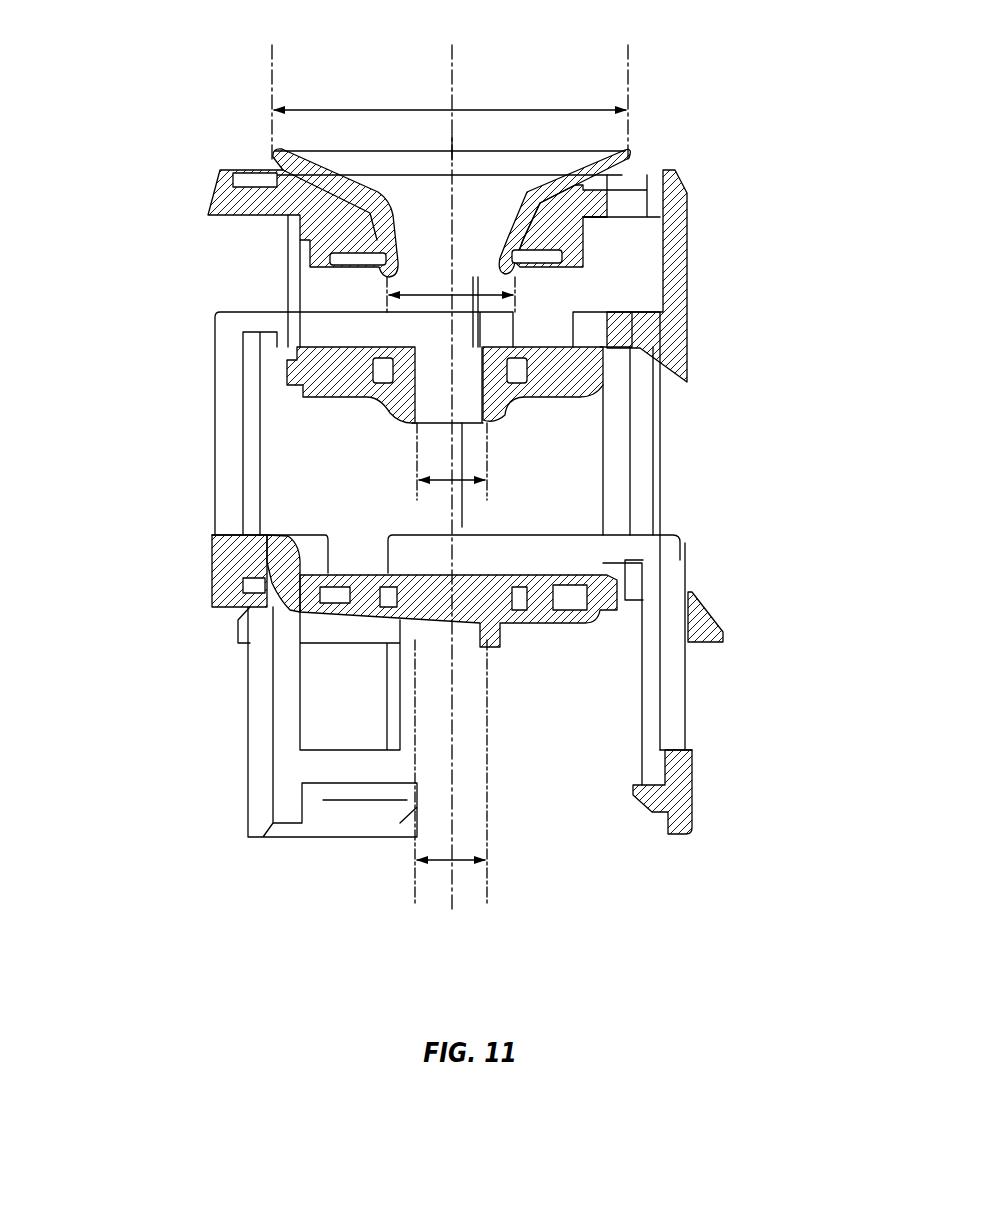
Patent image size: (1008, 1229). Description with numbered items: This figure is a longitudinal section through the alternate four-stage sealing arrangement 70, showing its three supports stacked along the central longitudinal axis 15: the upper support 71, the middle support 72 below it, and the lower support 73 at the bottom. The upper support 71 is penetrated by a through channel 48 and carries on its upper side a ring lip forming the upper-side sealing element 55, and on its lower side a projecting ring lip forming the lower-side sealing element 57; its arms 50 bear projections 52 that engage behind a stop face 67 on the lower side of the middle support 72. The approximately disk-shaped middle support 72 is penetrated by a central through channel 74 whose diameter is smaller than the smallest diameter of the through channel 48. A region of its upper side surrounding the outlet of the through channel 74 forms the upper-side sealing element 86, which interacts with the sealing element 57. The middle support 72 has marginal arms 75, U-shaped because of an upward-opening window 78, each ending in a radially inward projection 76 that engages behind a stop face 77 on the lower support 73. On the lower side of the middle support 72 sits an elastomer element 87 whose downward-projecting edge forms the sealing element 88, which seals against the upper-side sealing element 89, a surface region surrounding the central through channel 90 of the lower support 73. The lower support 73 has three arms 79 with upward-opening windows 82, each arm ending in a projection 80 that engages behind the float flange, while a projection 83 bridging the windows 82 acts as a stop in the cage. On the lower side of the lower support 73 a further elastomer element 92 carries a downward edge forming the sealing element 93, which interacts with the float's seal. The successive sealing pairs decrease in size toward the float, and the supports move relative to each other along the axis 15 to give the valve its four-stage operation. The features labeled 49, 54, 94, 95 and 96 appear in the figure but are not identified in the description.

The central longitudinal axis 15 is at (508, 198).
The through channel 48 is at (420, 215).
The cap flange 49 is at (640, 176).
The arms 50 is at (672, 255).
The projections 52 is at (680, 352).
The sealing lip 54 is at (522, 232).
The upper-side sealing element 55 is at (272, 152).
The lower-side sealing element 57 is at (385, 278).
The stop face 67 is at (383, 108).
The sealing arrangement 70 is at (128, 632).
The upper support 71 is at (703, 188).
The middle support 72 is at (188, 378).
The lower support 73 is at (718, 606).
The through channel 74 is at (600, 381).
The marginal arms 75 is at (225, 437).
The projection 76 is at (267, 612).
The stop face 77 is at (276, 560).
The window 78 is at (603, 455).
The arms 79 is at (690, 692).
The projection 80 is at (672, 805).
The windows 82 is at (668, 736).
The projection 83 is at (712, 637).
The upper-side sealing element 86 is at (300, 333).
The elastomer element 87 is at (318, 397).
The sealing element 88 is at (462, 373).
The upper-side sealing element 89 is at (487, 580).
The through channel 90 is at (437, 590).
The elastomer element 92 is at (387, 617).
The sealing element 93 is at (487, 655).
The gap 94 is at (540, 240).
The plate 95 is at (530, 517).
The stem diameter 96 is at (448, 875).